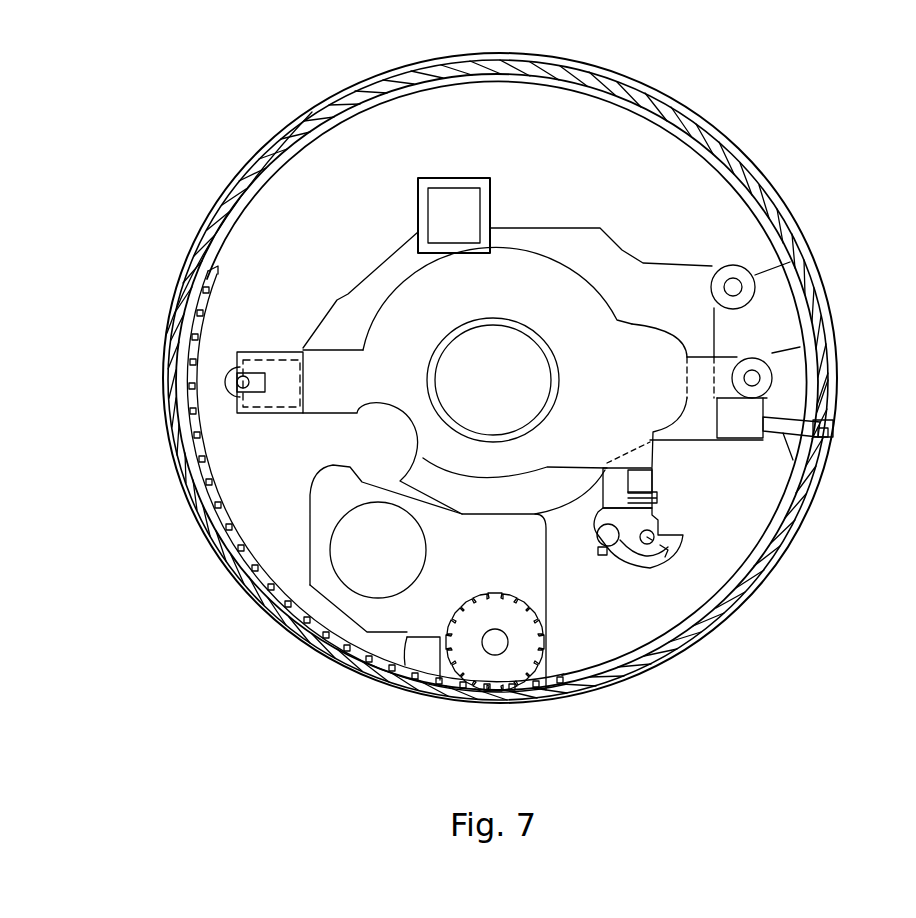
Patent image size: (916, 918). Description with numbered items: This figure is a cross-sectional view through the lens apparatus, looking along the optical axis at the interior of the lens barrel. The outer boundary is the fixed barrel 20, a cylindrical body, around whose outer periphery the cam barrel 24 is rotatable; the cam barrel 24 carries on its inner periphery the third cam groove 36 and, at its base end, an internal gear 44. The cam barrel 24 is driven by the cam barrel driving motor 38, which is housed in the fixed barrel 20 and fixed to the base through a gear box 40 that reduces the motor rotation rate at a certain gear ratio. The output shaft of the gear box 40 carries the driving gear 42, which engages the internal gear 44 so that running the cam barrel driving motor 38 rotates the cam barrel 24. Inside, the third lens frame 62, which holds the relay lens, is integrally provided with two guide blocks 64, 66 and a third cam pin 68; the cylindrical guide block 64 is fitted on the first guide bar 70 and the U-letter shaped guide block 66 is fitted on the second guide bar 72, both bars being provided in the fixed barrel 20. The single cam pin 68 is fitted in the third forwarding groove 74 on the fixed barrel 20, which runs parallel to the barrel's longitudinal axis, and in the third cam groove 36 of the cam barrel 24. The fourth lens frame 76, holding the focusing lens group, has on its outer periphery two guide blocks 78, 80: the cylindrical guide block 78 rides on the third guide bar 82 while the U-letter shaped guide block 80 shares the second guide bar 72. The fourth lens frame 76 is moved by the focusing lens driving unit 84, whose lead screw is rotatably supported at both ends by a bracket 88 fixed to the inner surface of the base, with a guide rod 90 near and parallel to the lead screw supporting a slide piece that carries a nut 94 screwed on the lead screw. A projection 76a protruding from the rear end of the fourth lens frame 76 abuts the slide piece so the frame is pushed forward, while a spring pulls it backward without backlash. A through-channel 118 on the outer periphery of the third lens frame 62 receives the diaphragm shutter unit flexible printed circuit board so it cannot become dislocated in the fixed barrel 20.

The fixed barrel 20 is at (630, 92).
The cam barrel 24 is at (317, 122).
The third cam groove 36 is at (826, 433).
The cam barrel driving motor 38 is at (347, 570).
The gear box 40 is at (430, 612).
The driving gear 42 is at (500, 670).
The internal gear 44 is at (338, 665).
The third lens frame 62 is at (620, 257).
The guide block 64 is at (758, 281).
The guide block 66 is at (275, 365).
The third cam pin 68 is at (792, 465).
The first guide bar 70 is at (736, 286).
The second guide bar 72 is at (232, 382).
The third forwarding groove 74 is at (820, 423).
The fourth lens frame 76 is at (537, 272).
The projection 76a is at (657, 495).
The guide block 78 is at (775, 352).
The guide block 80 is at (272, 413).
The third guide bar 82 is at (754, 378).
The focusing lens driving unit 84 is at (695, 545).
The bracket 88 is at (608, 556).
The guide rod 90 is at (670, 563).
The nut 94 is at (598, 530).
The through-channel 118 is at (437, 205).